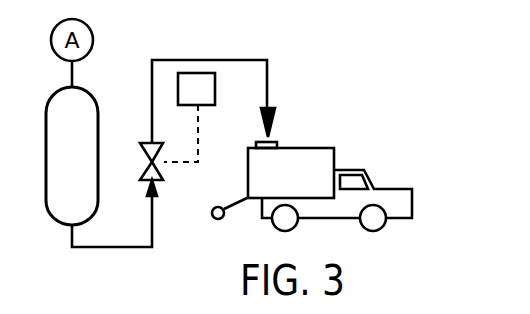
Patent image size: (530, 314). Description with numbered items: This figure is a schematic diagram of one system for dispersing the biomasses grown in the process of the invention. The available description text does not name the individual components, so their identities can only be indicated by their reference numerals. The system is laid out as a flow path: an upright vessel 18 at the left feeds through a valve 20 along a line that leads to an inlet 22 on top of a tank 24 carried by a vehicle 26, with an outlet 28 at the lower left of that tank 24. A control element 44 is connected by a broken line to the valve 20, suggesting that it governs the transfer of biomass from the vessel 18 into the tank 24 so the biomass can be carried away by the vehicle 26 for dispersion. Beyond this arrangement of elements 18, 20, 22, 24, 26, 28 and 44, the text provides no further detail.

The storage tank 18 is at (46, 143).
The valve 20 is at (148, 142).
The fill port 22 is at (272, 128).
The truck tank 24 is at (315, 162).
The truck 26 is at (368, 172).
The drain outlet 28 is at (214, 218).
The controller 44 is at (215, 90).